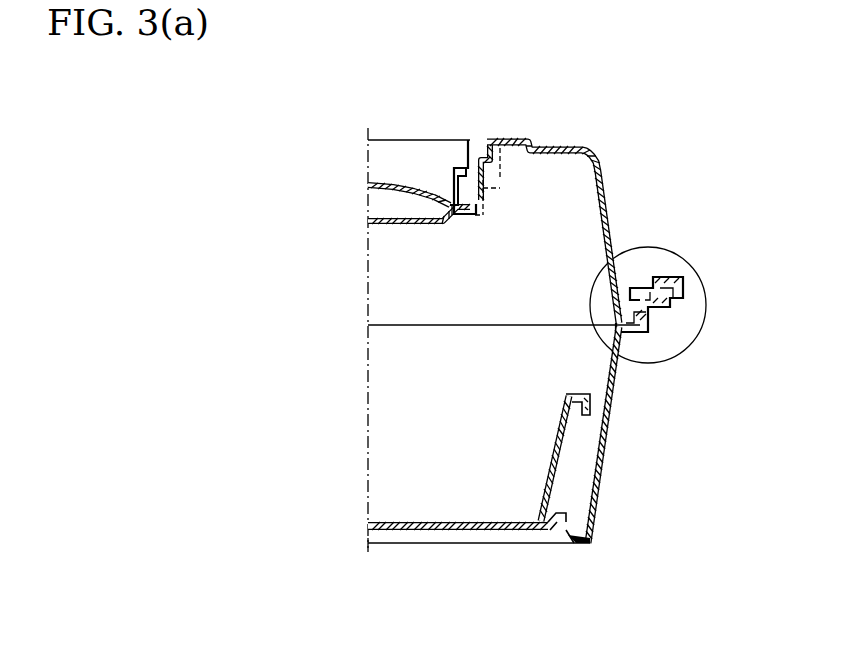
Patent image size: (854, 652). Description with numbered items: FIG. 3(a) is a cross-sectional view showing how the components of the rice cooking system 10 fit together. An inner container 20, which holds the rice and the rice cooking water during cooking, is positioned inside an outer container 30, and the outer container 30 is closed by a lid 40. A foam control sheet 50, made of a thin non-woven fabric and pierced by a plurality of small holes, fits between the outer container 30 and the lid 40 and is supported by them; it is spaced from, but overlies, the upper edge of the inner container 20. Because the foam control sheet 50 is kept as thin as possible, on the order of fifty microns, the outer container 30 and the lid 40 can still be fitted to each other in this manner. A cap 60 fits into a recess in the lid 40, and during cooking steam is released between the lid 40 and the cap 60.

The rice cooking system 10 is at (457, 613).
The inner container 20 is at (572, 438).
The outer container 30 is at (630, 467).
The lid 40 is at (618, 228).
The foam control sheet 50 is at (398, 332).
The cap 60 is at (417, 133).